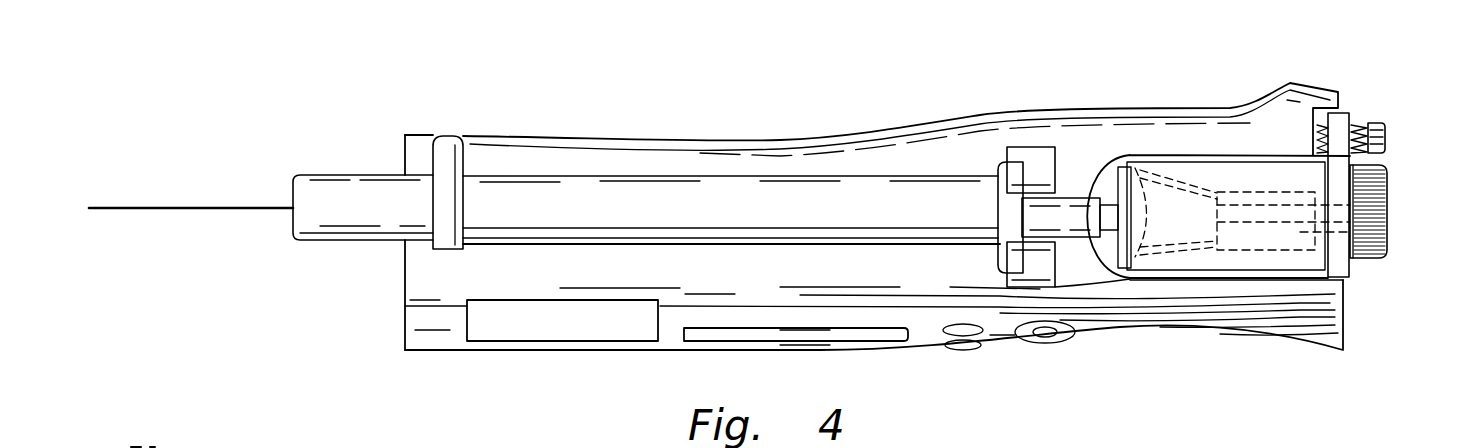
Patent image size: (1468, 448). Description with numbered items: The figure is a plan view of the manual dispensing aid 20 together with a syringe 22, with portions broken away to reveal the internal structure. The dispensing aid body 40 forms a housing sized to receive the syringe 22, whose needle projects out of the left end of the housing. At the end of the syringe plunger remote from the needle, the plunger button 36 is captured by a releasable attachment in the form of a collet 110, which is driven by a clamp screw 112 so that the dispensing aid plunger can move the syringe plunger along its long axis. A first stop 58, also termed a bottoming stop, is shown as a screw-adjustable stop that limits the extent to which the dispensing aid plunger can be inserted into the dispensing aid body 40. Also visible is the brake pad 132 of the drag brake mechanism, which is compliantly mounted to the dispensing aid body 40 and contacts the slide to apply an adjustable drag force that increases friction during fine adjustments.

The dispensing aid 20 is at (318, 125).
The syringe 22 is at (570, 193).
The dispensing aid body 40 is at (840, 135).
The brake pad 132 is at (1035, 162).
The plunger button 36 is at (1113, 180).
The collet 110 is at (1162, 170).
The first stop 58 is at (1368, 120).
The clamp screw 112 is at (1363, 257).